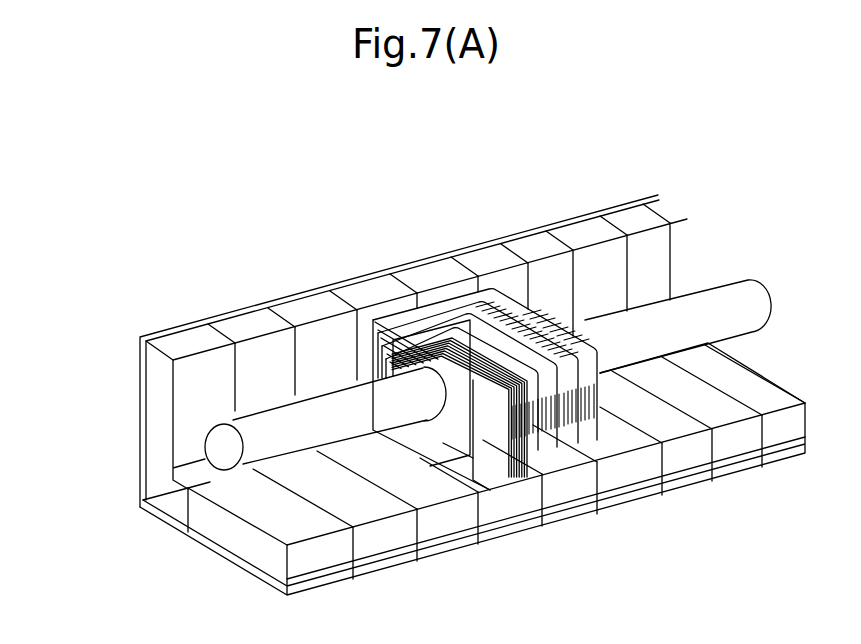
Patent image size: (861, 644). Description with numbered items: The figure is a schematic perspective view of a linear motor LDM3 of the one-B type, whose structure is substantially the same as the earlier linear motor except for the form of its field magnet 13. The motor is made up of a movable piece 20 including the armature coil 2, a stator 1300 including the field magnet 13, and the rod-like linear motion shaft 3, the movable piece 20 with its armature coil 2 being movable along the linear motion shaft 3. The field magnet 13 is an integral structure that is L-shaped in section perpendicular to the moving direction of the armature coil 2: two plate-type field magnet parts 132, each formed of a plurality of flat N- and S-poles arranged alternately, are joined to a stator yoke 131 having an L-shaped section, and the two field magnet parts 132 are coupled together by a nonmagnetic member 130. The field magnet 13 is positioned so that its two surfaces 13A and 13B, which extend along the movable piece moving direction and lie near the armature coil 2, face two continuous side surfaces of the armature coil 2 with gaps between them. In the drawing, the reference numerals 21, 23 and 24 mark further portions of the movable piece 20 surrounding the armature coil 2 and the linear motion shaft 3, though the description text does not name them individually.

The linear motor LDM3 is at (236, 251).
The stator 1300 is at (135, 323).
The field magnet 13 is at (153, 371).
The surface of field magnet 13A is at (272, 521).
The surface of field magnet 13B is at (199, 402).
The nonmagnetic member 130 is at (162, 486).
The stator yoke 131 is at (208, 526).
The field magnet part 132 is at (152, 410).
The armature coil 2 is at (448, 313).
The movable piece 20 is at (467, 292).
The bobbin 21 is at (482, 462).
The core 23 is at (452, 422).
The back yoke 24 is at (515, 442).
The linear motion shaft 3 is at (742, 307).